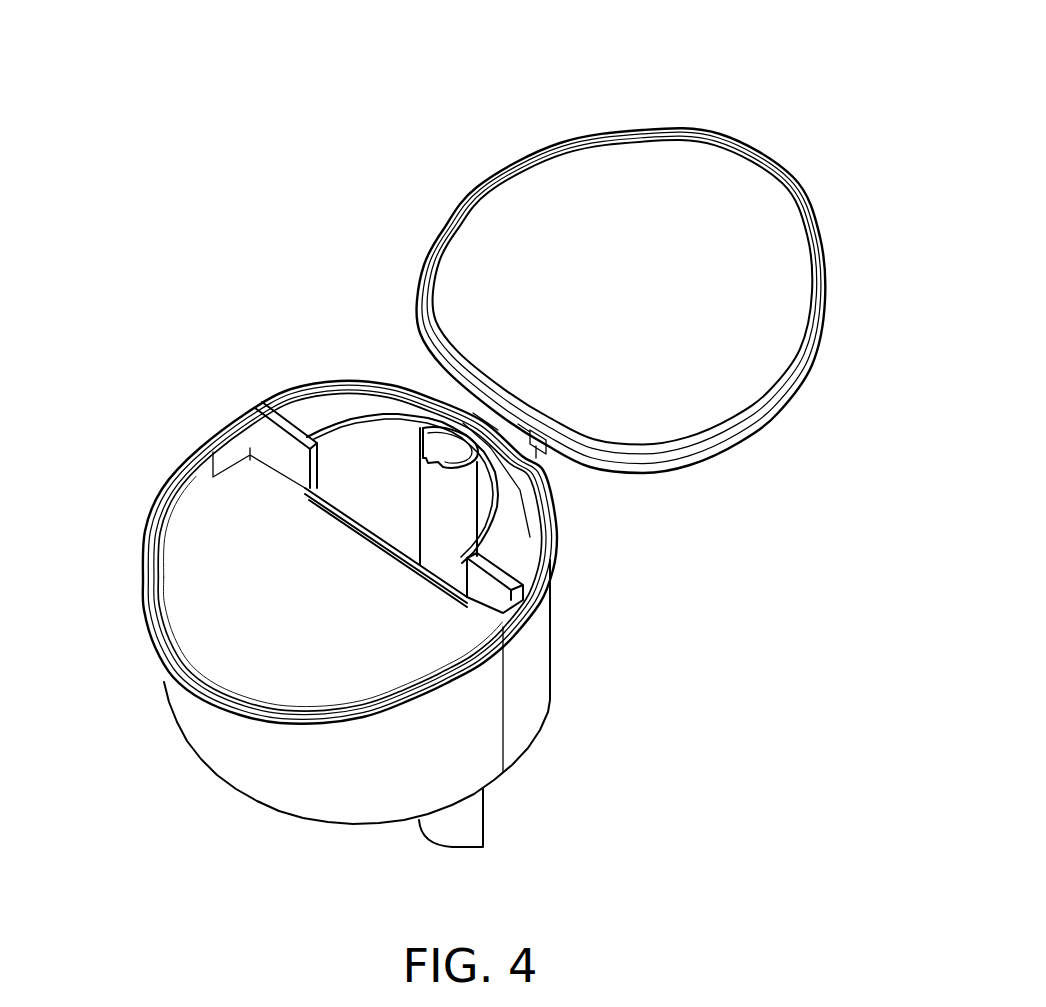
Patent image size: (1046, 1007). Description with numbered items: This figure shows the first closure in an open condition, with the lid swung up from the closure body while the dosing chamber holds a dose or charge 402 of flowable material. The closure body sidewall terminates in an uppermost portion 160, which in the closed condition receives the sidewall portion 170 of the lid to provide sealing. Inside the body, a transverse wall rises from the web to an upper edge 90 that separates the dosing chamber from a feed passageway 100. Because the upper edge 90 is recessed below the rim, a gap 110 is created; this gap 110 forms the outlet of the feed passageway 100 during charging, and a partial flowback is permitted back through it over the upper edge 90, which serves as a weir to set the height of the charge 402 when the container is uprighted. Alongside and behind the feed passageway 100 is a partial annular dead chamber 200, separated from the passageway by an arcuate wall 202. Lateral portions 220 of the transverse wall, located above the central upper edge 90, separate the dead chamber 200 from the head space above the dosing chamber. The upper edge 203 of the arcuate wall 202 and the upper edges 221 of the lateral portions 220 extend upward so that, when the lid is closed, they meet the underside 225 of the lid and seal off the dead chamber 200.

The sidewall portion of the lid 170 is at (752, 140).
The underside of the lid 225 is at (778, 310).
The partial annular dead chamber 200 is at (411, 390).
The upper edge of the transverse wall 90 is at (360, 527).
The feed passageway 100 is at (381, 452).
The upper edges of lateral portions 221 is at (260, 410).
The lateral portions of the transverse wall 220 is at (248, 433).
The gap 110 is at (310, 479).
The dose or charge of flowable material 402 is at (183, 623).
The uppermost portion of the sidewall upper portion 160 is at (178, 682).
The arcuate wall 202 is at (495, 473).
The upper edge of the arcuate wall 203 is at (495, 510).